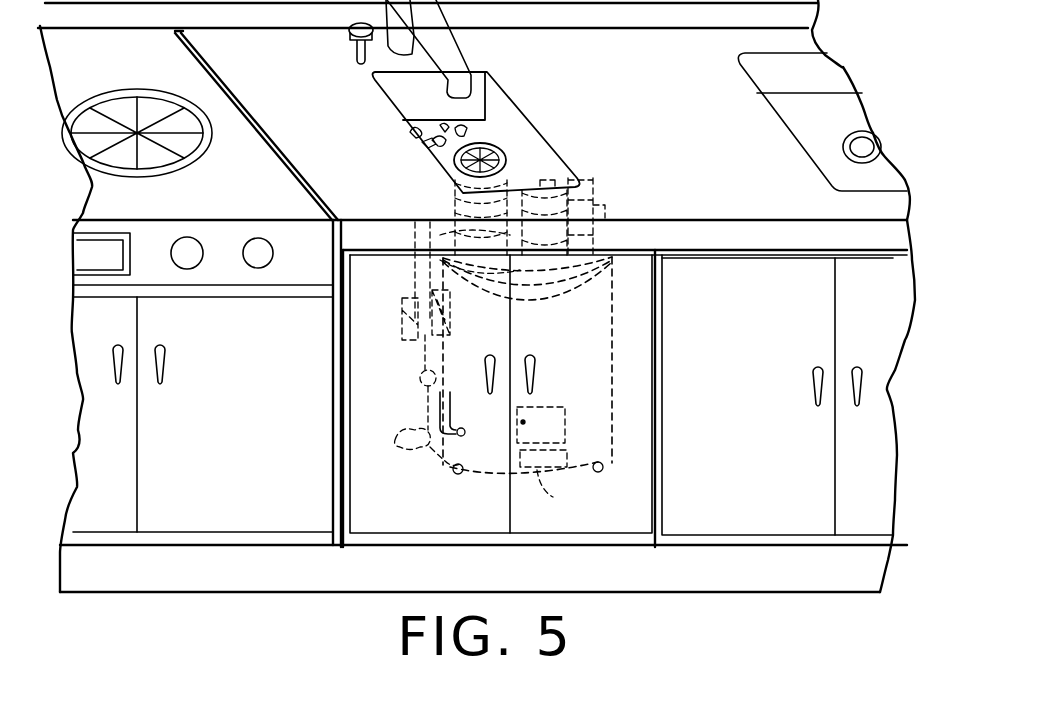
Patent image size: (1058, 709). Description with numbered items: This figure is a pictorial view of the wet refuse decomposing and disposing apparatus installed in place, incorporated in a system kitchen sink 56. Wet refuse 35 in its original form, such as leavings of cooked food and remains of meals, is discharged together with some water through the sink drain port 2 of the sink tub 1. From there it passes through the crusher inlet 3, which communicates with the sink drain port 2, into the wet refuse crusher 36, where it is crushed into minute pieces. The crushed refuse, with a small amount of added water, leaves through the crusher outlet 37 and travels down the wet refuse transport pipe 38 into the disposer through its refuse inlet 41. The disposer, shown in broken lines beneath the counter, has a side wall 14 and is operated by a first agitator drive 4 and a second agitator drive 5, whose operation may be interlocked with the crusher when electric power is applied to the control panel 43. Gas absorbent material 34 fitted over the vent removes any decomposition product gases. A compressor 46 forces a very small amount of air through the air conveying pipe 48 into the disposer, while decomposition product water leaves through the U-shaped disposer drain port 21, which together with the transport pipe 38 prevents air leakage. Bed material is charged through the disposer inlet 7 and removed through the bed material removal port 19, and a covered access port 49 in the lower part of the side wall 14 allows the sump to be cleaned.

The sink tub 1 is at (488, 98).
The sink drain port 2 is at (510, 167).
The crusher inlet 3 is at (536, 175).
The first agitator drive 4 is at (562, 176).
The second agitator drive 5 is at (600, 211).
The disposer inlet 7 is at (612, 281).
The side wall 14 is at (613, 317).
The bed material removal port 19 is at (567, 420).
The disposer drain port 21 is at (402, 433).
The gas absorbent material 34 is at (583, 180).
The wet refuse 35 is at (397, 114).
The wet refuse crusher 36 is at (443, 193).
The crusher outlet 37 is at (420, 209).
The wet refuse transport pipe 38 is at (413, 263).
The refuse inlet 41 is at (450, 324).
The control panel 43 is at (408, 341).
The compressor 46 is at (418, 392).
The air conveying pipe 48 is at (433, 463).
The access port 49 is at (559, 492).
The system kitchen sink 56 is at (713, 233).